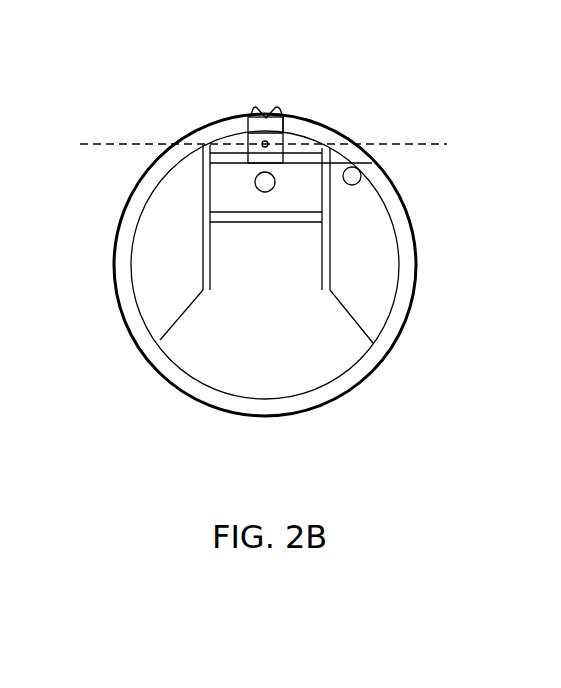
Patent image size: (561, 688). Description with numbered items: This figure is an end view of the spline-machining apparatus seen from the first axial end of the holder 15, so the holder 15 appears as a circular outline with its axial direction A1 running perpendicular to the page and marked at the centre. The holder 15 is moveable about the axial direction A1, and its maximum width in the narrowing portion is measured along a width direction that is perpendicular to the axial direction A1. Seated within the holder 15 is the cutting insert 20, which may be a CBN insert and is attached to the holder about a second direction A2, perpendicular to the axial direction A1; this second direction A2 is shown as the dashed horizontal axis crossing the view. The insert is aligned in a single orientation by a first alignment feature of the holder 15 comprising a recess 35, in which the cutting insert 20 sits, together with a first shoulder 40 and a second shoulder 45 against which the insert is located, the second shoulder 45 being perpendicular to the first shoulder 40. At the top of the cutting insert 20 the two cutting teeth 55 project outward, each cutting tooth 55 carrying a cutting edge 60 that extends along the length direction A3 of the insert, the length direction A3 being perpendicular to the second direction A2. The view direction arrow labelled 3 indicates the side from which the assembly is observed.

The holder 15 is at (192, 387).
The cutting insert 20 is at (285, 140).
The recess 35 is at (331, 160).
The first shoulder 40 is at (250, 117).
The second shoulder 45 is at (258, 176).
The cutting tooth 55 is at (258, 112).
The cutting edge 60 is at (287, 112).
The axial direction A1 is at (267, 265).
The second direction A2 is at (282, 148).
The length direction A3 is at (250, 143).
The view direction 3 is at (112, 265).